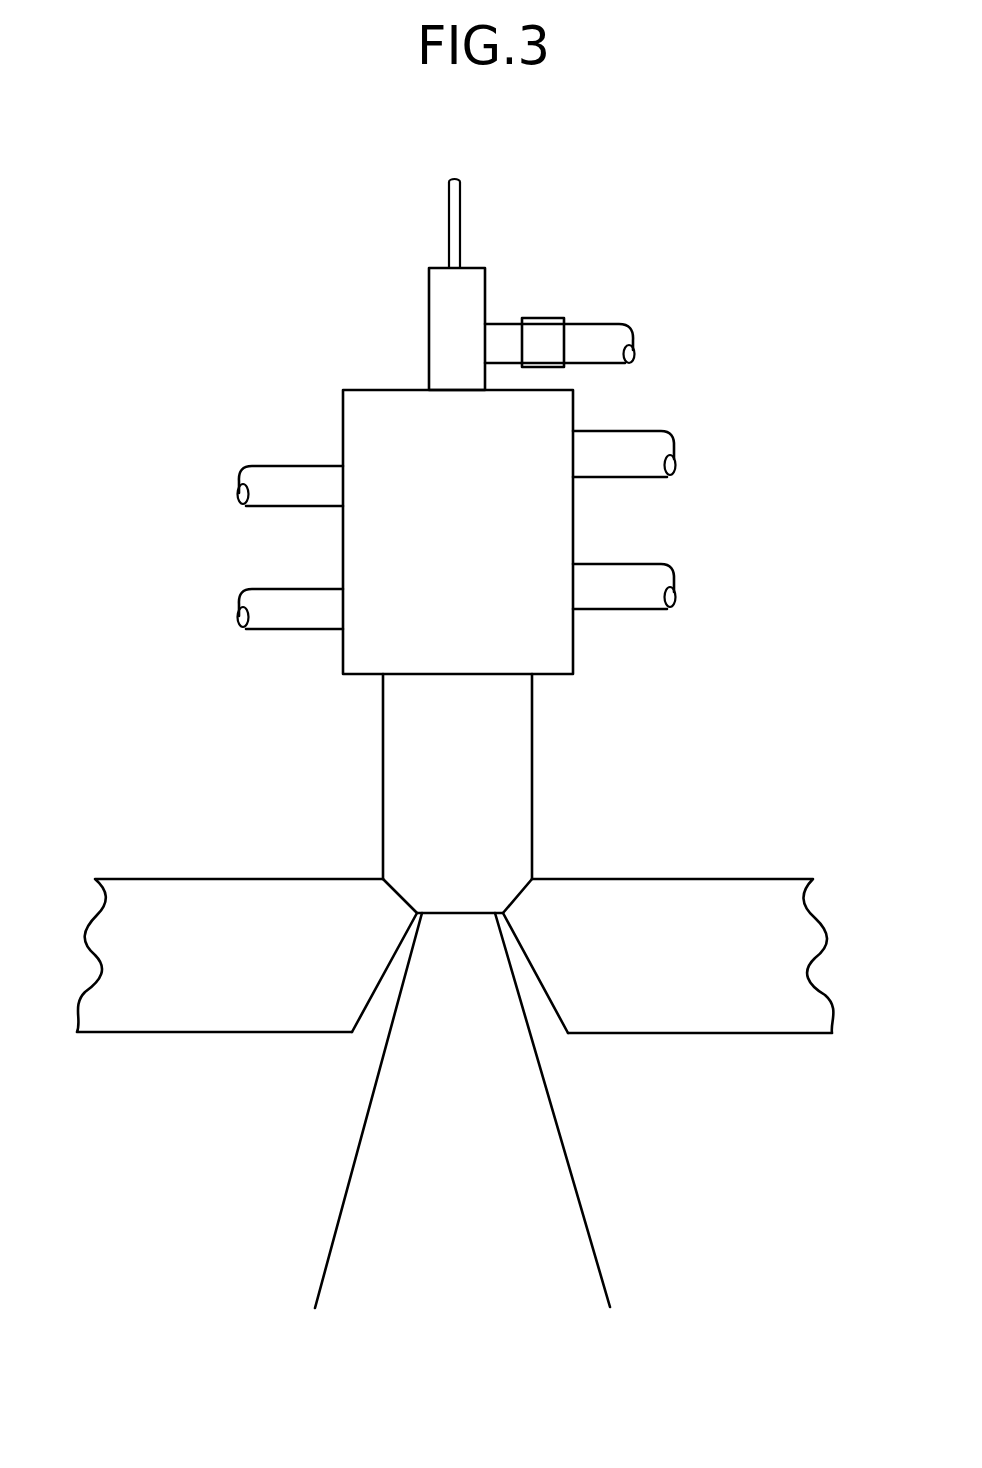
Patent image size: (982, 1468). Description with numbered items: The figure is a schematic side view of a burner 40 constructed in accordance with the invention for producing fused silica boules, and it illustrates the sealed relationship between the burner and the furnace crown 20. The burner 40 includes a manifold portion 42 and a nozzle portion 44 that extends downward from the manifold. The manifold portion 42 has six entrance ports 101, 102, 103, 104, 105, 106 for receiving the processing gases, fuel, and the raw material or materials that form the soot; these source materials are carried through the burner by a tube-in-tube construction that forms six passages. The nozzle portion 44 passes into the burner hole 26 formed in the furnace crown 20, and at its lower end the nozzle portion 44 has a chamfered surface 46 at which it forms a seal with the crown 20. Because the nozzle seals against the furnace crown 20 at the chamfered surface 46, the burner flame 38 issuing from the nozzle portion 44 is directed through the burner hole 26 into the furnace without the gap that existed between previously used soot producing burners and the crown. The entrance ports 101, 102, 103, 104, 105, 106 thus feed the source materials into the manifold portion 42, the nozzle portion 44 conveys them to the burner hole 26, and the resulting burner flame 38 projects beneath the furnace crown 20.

The furnace crown 20 is at (675, 962).
The burner hole 26 is at (383, 1020).
The burner flame 38 is at (471, 1117).
The burner 40 is at (294, 730).
The manifold portion 42 is at (563, 428).
The nozzle portion 44 is at (502, 782).
The chamfered surface 46 is at (512, 898).
The entrance port 101 is at (453, 166).
The entrance port 102 is at (613, 336).
The entrance port 103 is at (633, 465).
The entrance port 104 is at (280, 477).
The entrance port 105 is at (627, 598).
The entrance port 106 is at (288, 618).